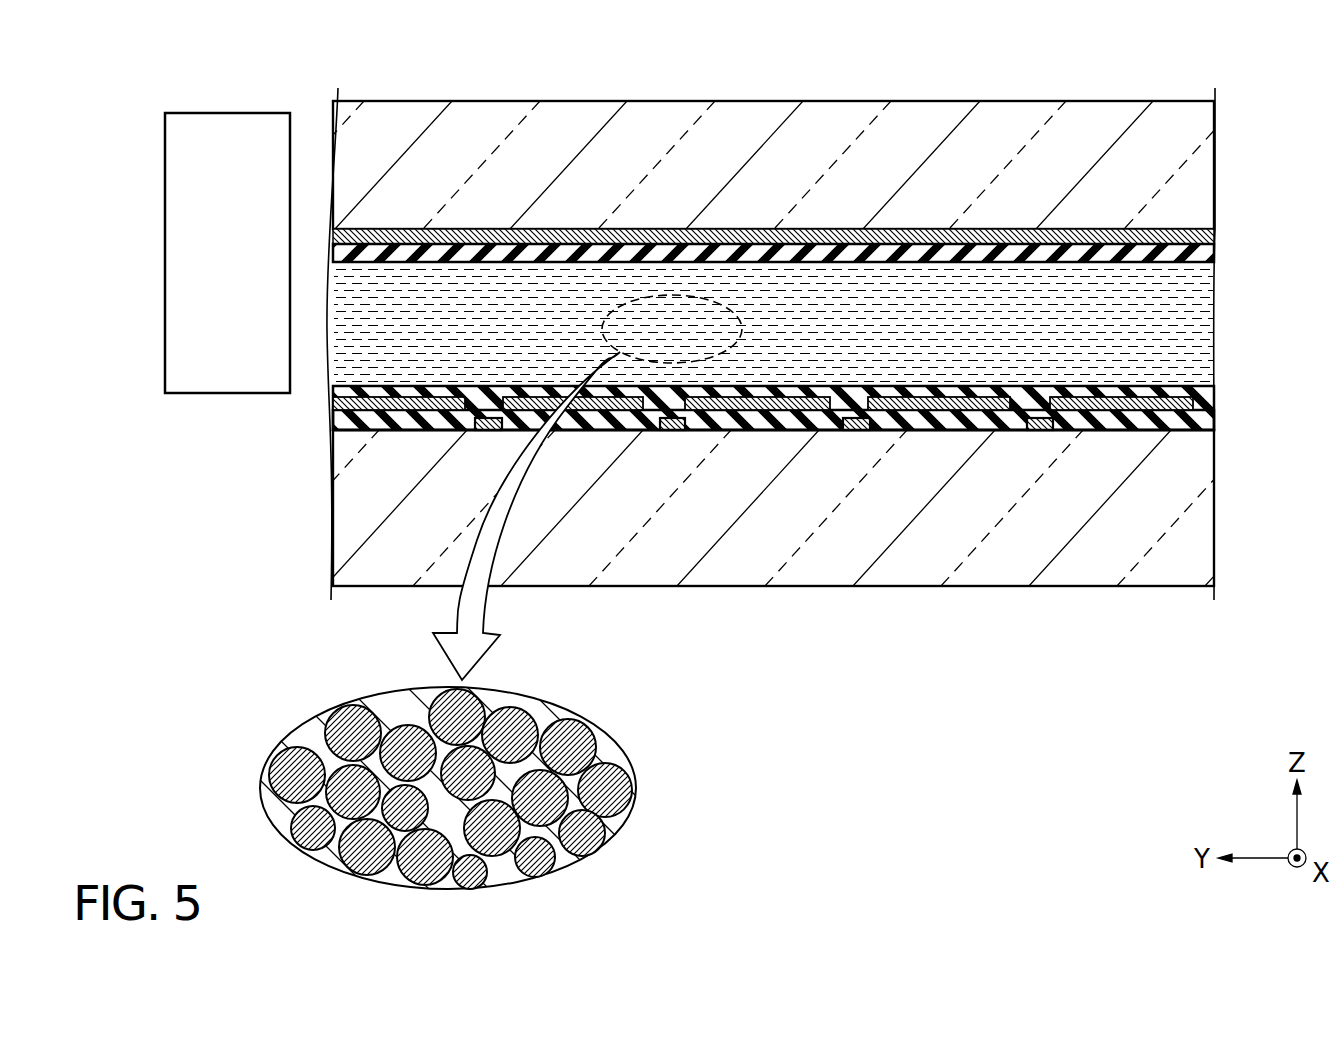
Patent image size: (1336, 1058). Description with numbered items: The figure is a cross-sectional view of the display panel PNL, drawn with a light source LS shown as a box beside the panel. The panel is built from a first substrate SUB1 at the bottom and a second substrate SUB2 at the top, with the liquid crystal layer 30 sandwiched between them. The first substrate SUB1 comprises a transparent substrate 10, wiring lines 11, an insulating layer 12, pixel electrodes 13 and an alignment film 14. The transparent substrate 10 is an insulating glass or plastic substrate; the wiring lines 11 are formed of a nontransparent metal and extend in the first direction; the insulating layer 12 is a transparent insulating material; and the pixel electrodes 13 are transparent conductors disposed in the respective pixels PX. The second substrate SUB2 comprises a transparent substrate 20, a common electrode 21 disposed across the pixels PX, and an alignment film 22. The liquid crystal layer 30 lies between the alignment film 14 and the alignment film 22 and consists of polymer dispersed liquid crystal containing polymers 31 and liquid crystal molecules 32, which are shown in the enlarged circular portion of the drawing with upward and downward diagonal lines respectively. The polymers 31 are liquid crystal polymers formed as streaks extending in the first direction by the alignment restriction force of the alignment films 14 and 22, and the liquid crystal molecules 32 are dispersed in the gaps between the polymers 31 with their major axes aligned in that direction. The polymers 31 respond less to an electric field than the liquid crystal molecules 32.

The transparent substrate 10 is at (717, 573).
The wiring lines 11 is at (483, 430).
The insulating layer 12 is at (905, 418).
The pixel electrodes 13 is at (373, 402).
The alignment film 14 is at (1022, 398).
The transparent substrate 20 is at (843, 108).
The common electrode 21 is at (978, 238).
The alignment film 22 is at (1077, 253).
The liquid crystal layer 30 is at (1200, 342).
The polymers 31 is at (625, 788).
The liquid crystal molecules 32 is at (612, 827).
The display panel PNL is at (1188, 99).
The first substrate SUB1 is at (1208, 537).
The second substrate SUB2 is at (1208, 197).
The light source LS is at (187, 395).
The pixels PX is at (584, 430).